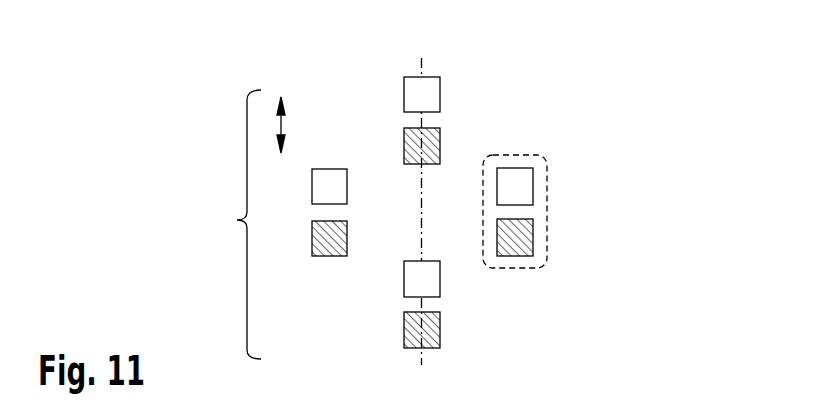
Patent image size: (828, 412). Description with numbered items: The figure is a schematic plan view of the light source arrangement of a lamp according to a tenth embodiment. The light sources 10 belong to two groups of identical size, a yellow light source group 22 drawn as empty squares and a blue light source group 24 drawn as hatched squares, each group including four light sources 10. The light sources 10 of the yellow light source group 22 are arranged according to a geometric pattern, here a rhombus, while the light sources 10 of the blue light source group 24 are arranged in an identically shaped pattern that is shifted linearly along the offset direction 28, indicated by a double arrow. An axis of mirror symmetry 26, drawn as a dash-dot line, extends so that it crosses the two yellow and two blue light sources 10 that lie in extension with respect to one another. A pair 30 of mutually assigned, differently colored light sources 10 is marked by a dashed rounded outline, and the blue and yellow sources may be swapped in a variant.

The light source 10 is at (190, 224).
The yellow light source group 22 is at (190, 224).
The blue light source group 24 is at (190, 224).
The axis of mirror symmetry 26 is at (422, 70).
The offset direction 28 is at (282, 129).
The pair of differently colored light sources 30 is at (520, 155).